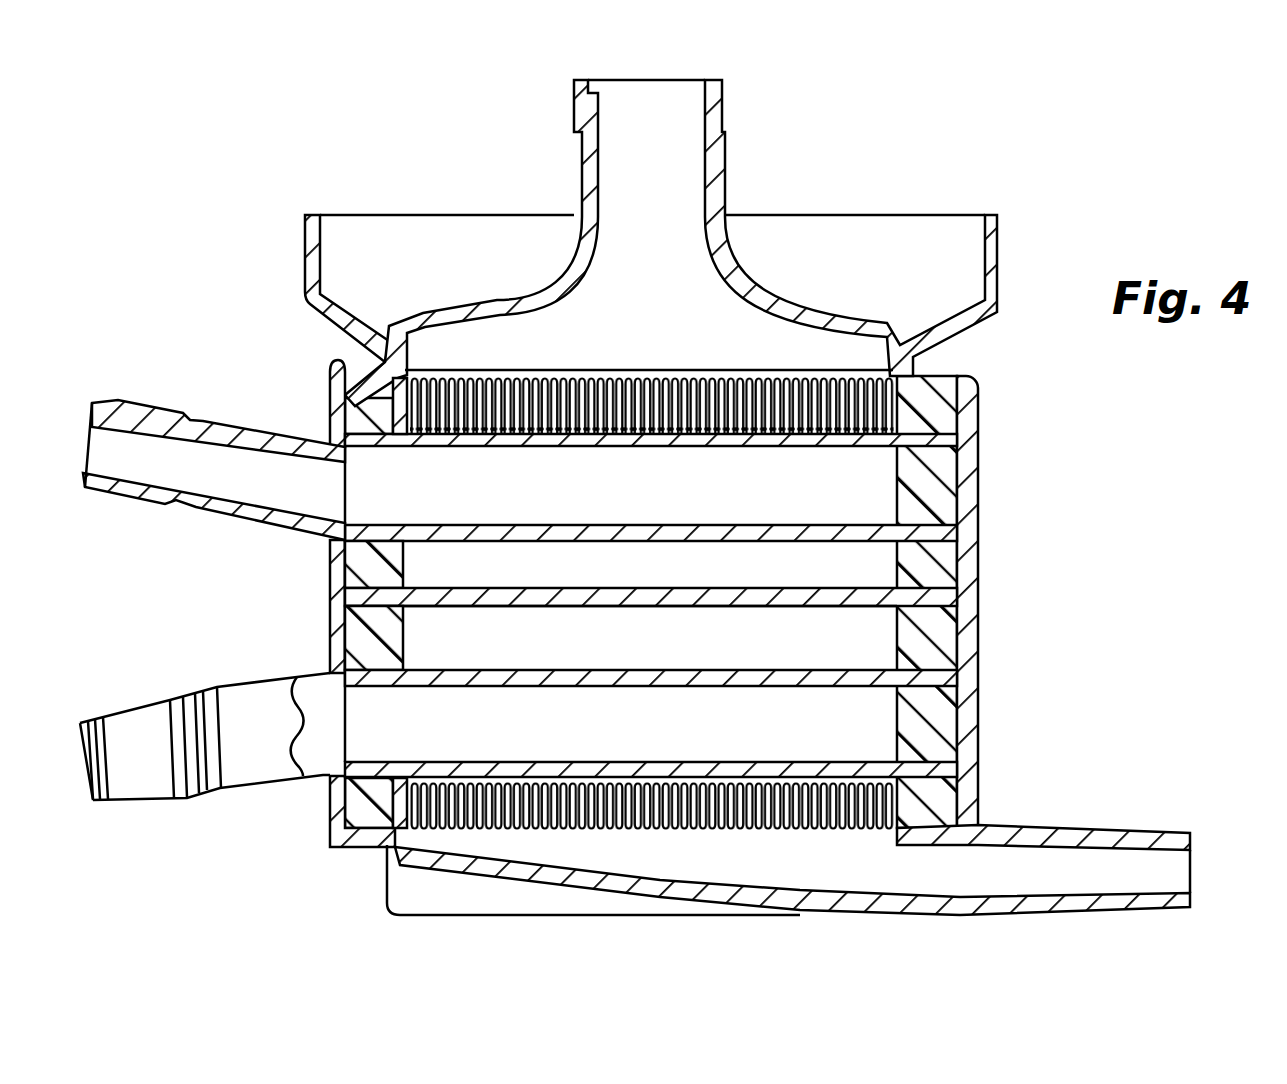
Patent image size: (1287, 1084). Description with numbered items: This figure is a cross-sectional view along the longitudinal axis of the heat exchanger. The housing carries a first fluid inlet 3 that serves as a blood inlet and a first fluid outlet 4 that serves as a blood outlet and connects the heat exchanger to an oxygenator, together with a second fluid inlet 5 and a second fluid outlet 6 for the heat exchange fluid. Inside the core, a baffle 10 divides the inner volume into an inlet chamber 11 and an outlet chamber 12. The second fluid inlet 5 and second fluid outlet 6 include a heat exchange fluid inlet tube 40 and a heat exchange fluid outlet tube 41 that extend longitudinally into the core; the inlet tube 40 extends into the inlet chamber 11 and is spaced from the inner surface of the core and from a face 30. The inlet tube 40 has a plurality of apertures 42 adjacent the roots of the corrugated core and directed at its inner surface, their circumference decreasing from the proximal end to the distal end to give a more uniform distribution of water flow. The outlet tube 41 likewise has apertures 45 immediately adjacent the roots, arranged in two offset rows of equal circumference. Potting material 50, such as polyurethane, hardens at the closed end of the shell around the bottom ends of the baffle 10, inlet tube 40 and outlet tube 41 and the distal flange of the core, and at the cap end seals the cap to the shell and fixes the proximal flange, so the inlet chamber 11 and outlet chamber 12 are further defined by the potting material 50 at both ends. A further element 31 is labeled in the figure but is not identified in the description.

The first fluid inlet 3 is at (1165, 827).
The first fluid outlet 4 is at (570, 107).
The second fluid inlet 5 is at (148, 399).
The second fluid outlet 6 is at (152, 806).
The baffle 10 is at (840, 600).
The inlet chamber 11 is at (773, 577).
The outlet chamber 12 is at (736, 655).
The face 30 is at (832, 593).
The filter plate lower face 31 is at (822, 613).
The heat exchange fluid inlet tube 40 is at (440, 548).
The heat exchange fluid outlet tube 41 is at (453, 661).
The apertures 42 is at (836, 448).
The apertures 45 is at (842, 760).
The potting material 50 is at (350, 404).